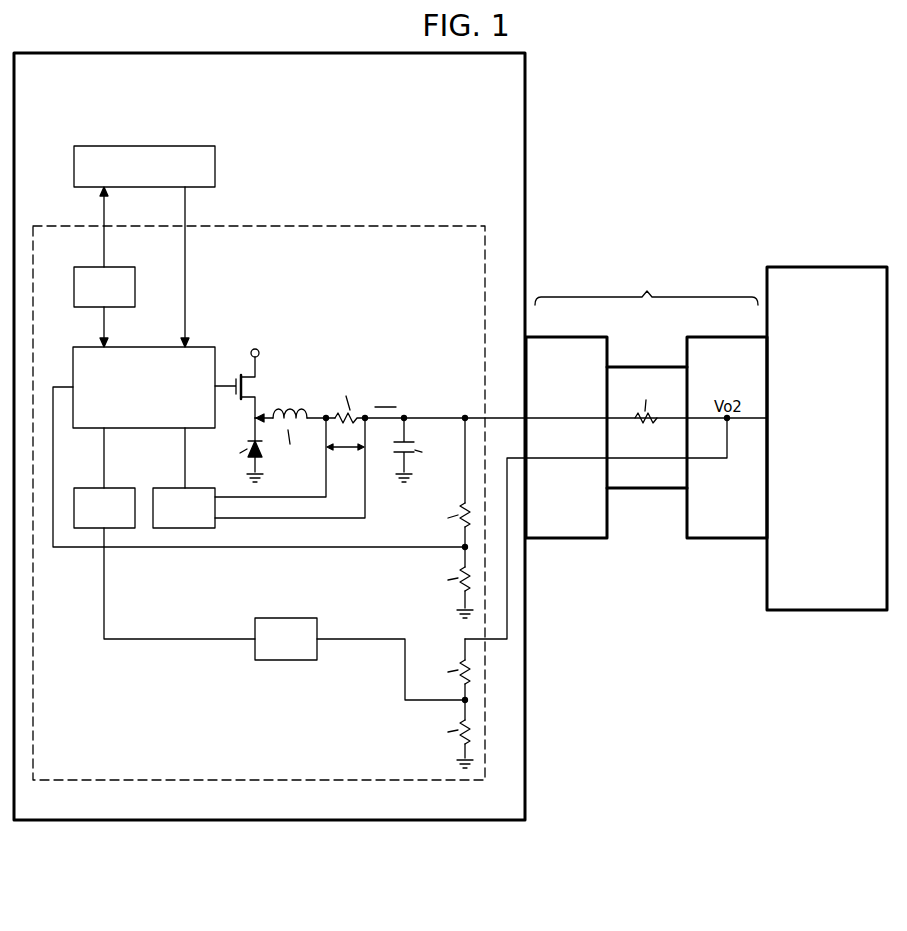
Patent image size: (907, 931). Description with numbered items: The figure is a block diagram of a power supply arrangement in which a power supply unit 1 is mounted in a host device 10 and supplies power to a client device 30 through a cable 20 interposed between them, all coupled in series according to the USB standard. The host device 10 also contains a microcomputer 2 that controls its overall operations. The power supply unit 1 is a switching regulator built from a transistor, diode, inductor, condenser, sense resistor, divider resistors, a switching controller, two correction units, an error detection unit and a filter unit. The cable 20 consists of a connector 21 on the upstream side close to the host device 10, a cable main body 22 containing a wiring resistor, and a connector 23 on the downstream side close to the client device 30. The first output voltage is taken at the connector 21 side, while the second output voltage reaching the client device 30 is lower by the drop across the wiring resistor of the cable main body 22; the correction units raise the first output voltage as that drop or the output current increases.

The host device 10 is at (276, 53).
The microcomputer 2 is at (147, 146).
The power supply unit 1 is at (355, 226).
The cable 20 is at (647, 291).
The connector 21 is at (568, 337).
The cable main body 22 is at (648, 367).
The connector 23 is at (726, 337).
The client device 30 is at (828, 267).